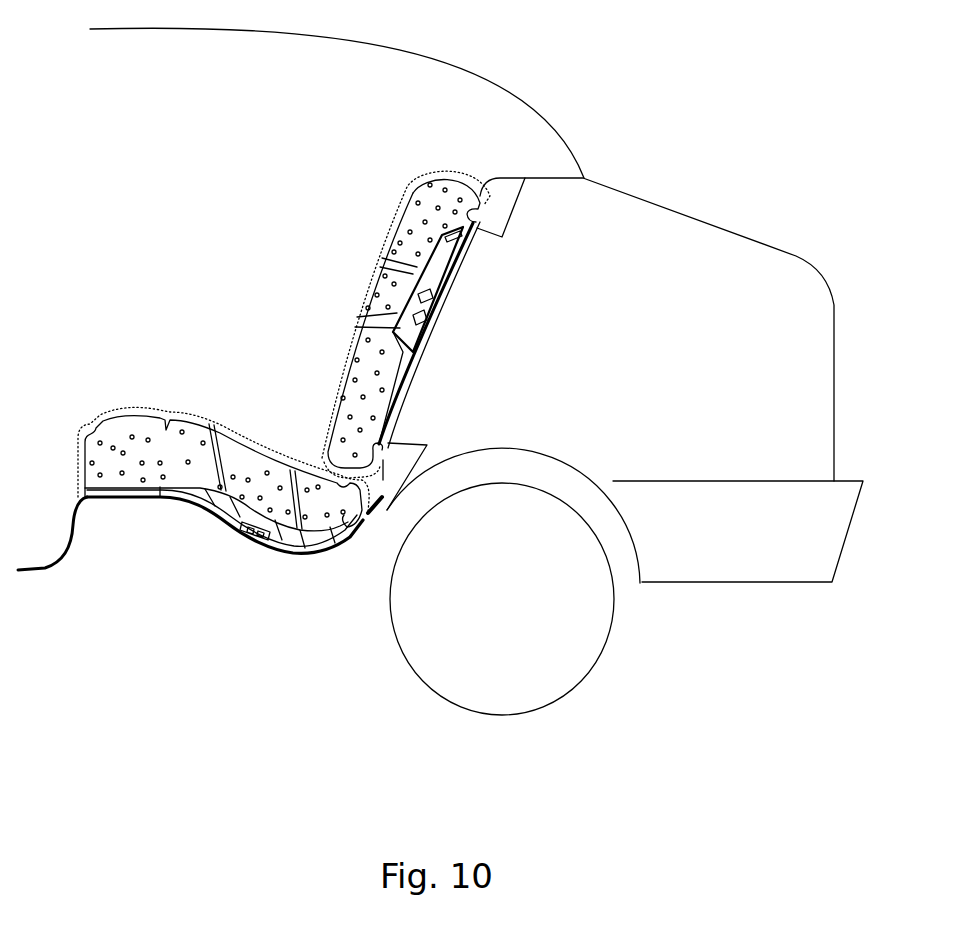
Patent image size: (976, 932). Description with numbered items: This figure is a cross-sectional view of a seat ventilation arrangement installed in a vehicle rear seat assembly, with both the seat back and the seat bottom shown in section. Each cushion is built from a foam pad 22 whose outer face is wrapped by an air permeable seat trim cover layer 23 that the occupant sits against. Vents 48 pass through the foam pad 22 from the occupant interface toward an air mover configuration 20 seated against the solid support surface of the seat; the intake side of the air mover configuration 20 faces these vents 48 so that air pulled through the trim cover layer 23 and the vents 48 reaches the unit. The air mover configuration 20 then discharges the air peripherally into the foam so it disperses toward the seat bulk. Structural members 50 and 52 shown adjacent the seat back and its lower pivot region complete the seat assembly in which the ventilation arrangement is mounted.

The air mover configuration 20 is at (445, 323).
The foam pad 22 is at (418, 203).
The air permeable seat trim cover layer 23 is at (366, 272).
The vent 48 is at (370, 313).
The support rail 50 is at (467, 263).
The mounting bracket 52 is at (348, 528).